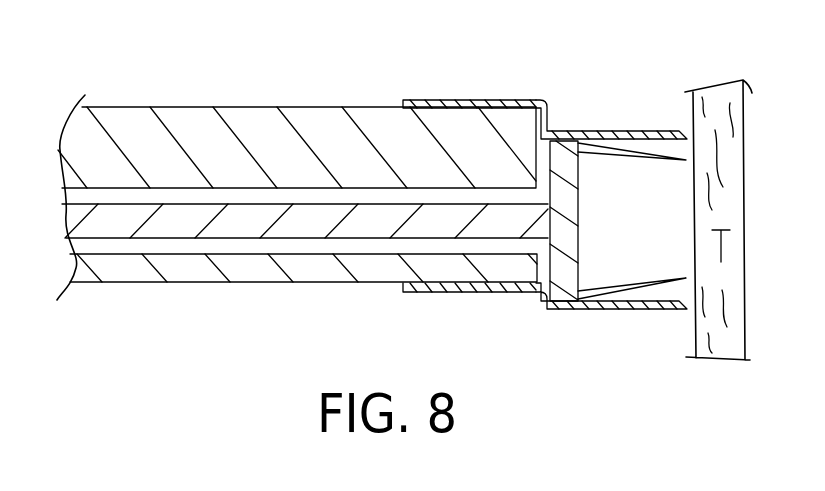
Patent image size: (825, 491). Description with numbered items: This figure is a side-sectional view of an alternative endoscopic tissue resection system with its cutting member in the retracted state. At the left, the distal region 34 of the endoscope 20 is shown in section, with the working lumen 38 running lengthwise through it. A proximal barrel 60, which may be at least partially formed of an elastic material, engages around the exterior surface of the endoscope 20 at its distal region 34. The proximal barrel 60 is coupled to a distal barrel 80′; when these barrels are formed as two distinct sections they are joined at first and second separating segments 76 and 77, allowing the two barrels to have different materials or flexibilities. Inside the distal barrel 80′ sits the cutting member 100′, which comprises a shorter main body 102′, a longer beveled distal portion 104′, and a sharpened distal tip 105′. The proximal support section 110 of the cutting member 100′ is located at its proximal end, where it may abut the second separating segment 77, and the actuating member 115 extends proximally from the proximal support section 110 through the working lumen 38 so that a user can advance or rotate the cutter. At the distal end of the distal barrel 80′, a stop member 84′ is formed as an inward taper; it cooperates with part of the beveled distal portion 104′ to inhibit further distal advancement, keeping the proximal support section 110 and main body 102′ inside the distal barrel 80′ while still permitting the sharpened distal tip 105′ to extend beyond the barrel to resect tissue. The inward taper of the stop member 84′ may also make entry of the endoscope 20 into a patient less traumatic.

The endoscope 20 is at (194, 264).
The working lumen 38 is at (310, 246).
The distal region of the endoscope 34 is at (396, 267).
The actuating member 115 is at (454, 228).
The proximal barrel 60 is at (457, 96).
The first separating segment 76 is at (535, 112).
The second separating segment 77 is at (542, 297).
The distal barrel 80′ is at (608, 126).
The cutting member 100′ is at (571, 136).
The main body 102′ is at (602, 297).
The beveled distal portion 104′ is at (656, 150).
The stop member 84′ is at (687, 304).
The sharpened distal tip 105′ is at (697, 273).
The proximal support section 110 is at (571, 302).